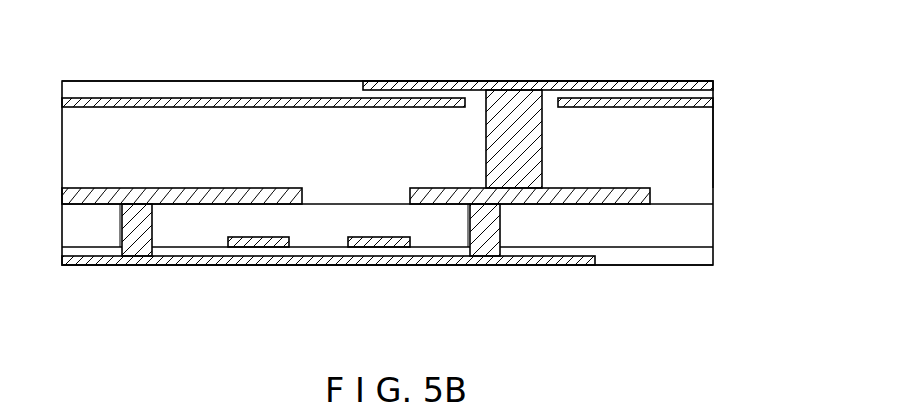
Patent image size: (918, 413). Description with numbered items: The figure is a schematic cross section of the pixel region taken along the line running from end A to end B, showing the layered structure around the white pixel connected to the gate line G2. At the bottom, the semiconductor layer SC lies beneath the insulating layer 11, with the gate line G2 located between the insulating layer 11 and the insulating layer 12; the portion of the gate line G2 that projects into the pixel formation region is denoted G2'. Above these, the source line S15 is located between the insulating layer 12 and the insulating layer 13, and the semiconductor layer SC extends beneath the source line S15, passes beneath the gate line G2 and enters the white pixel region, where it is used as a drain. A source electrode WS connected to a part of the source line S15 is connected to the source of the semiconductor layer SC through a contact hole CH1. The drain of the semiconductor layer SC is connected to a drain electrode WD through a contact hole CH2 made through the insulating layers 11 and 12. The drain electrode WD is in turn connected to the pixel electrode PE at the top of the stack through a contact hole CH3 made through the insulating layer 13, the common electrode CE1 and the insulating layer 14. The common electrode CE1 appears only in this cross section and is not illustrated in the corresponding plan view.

The insulating layer 14 is at (713, 93).
The insulating layer 13 is at (713, 156).
The insulating layer 12 is at (713, 217).
The insulating layer 11 is at (713, 251).
The common electrode CE1 is at (132, 100).
The pixel electrode PE is at (394, 82).
The source line S15 is at (96, 188).
The contact hole CH3 is at (542, 152).
The source electrode WS is at (118, 206).
The contact hole CH1 is at (152, 228).
The gate line G2 is at (258, 280).
The semiconductor layer SC is at (317, 266).
The projecting portion of the gate line G2' is at (379, 280).
The drain electrode WD is at (466, 206).
The contact hole CH2 is at (502, 228).
The section line end A is at (59, 280).
The section line end B is at (717, 280).